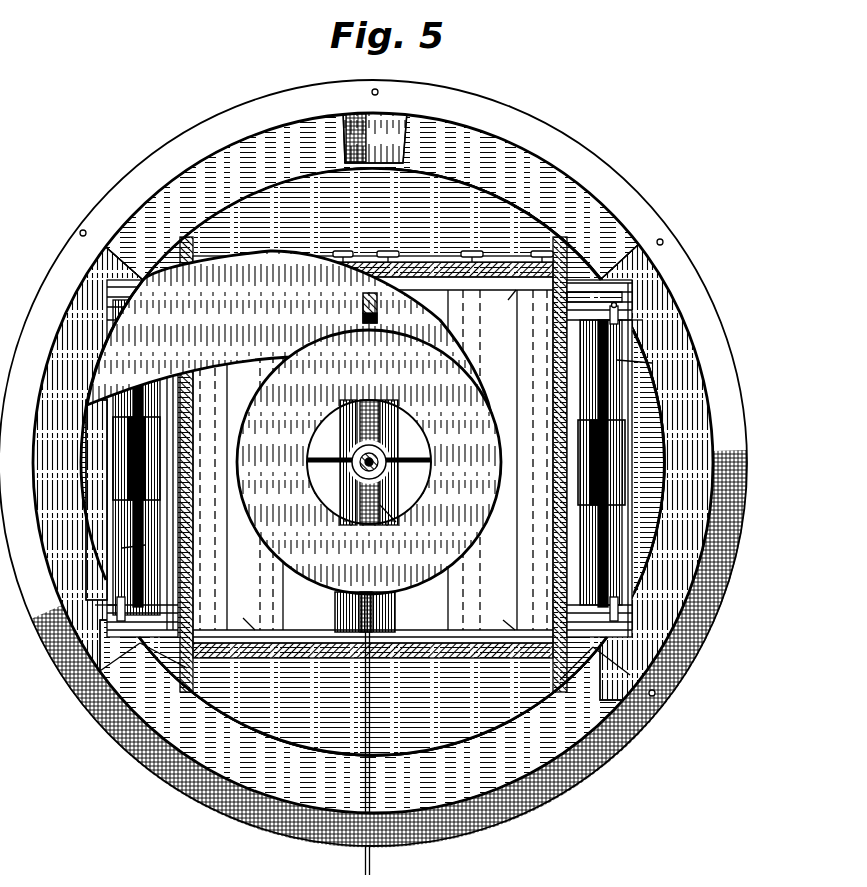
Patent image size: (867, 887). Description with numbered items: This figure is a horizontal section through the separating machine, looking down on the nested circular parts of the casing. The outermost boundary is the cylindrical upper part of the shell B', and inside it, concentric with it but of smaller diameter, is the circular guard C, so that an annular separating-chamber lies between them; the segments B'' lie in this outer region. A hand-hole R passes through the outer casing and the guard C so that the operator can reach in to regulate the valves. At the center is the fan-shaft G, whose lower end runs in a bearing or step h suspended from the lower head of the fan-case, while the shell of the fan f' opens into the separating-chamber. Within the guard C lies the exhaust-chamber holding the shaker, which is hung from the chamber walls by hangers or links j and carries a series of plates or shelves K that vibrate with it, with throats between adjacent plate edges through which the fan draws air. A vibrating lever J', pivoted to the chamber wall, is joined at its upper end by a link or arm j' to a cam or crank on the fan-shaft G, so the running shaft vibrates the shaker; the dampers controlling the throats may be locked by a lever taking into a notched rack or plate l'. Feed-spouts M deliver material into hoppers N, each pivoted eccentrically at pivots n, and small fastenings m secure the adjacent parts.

The upper part of shell or casing B' is at (373, 464).
The casing side segments B'' is at (390, 470).
The guard C is at (373, 462).
The hand-hole R is at (375, 136).
The shell of the fan f' is at (289, 332).
The vibrating lever J' is at (350, 308).
The link or arm j' is at (507, 306).
The hangers or links j is at (376, 616).
The plates or shelves K is at (373, 464).
The fan-shaft G is at (369, 462).
The feed-spouts M is at (369, 458).
The hoppers N is at (388, 457).
The bolt m is at (368, 462).
The pivots n is at (385, 432).
The bearing or step h is at (380, 473).
The notched rack or plate l' is at (365, 733).